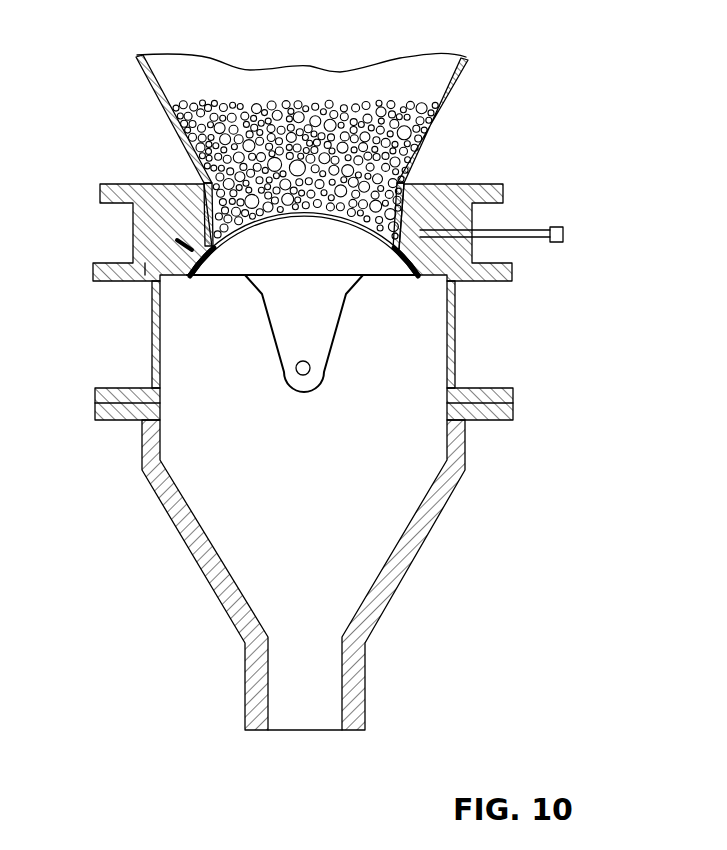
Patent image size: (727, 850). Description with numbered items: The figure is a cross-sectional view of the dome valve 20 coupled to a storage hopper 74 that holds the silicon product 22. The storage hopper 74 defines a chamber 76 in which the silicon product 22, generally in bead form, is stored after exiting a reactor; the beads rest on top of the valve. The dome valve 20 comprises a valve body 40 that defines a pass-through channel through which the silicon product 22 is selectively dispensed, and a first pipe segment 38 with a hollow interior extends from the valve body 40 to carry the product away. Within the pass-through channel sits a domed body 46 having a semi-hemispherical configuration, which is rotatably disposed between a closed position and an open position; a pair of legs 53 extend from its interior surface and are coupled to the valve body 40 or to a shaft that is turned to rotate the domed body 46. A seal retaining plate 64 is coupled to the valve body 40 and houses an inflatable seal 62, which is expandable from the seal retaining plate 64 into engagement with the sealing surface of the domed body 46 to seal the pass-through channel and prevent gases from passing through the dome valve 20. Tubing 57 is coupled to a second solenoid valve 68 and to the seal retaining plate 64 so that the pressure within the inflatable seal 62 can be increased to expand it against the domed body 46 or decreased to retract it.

The dome valve 20 is at (319, 433).
The silicon product 22 is at (394, 176).
The first pipe segment 38 is at (462, 432).
The valve body 40 is at (456, 340).
The domed body 46 is at (303, 302).
The pair of legs 53 is at (290, 340).
The tubing 57 is at (521, 210).
The inflatable seal 62 is at (183, 274).
The seal retaining plate 64 is at (480, 185).
The second solenoid valve 68 is at (563, 233).
The storage hopper 74 is at (130, 105).
The chamber 76 is at (380, 92).